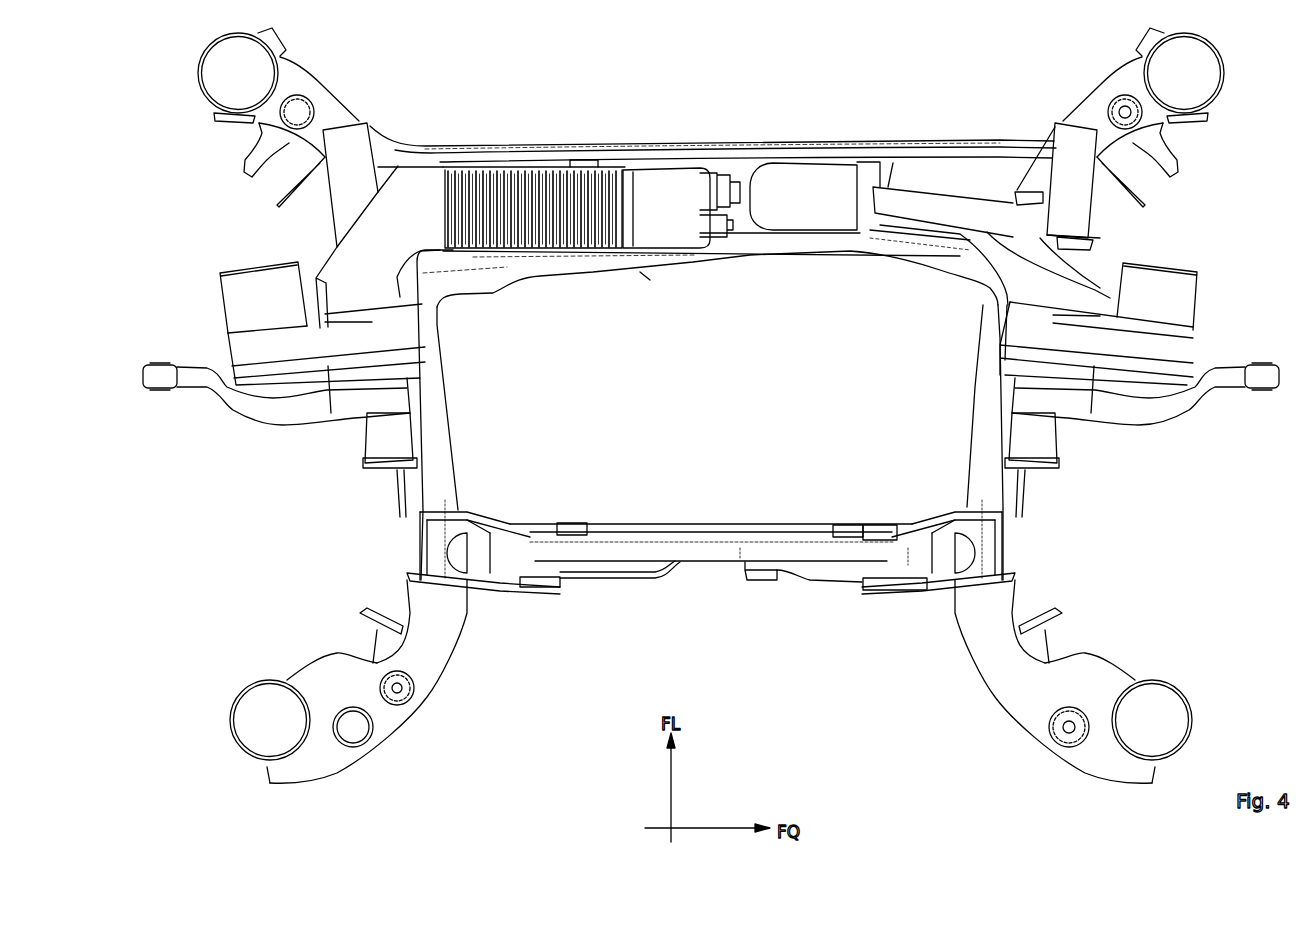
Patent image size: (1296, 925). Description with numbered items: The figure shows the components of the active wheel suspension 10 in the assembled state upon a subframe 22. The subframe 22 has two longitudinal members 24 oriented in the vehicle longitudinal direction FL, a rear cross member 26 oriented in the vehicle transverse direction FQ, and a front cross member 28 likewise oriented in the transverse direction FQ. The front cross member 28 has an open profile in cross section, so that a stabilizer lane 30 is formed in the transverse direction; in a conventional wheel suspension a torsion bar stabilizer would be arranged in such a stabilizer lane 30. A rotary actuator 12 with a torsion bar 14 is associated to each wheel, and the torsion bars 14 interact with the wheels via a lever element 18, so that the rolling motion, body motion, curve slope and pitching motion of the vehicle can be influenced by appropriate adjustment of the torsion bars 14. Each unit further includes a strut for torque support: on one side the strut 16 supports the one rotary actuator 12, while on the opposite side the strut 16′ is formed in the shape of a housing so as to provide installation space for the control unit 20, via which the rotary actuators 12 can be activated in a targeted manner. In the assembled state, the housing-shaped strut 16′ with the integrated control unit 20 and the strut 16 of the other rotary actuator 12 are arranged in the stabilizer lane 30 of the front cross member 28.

The front axle 10 is at (142, 69).
The rotary actuator 12 is at (247, 303).
The torsion bar 14 is at (375, 440).
The strut 16 is at (1010, 227).
The strut 16′ is at (397, 224).
The lever element 18 is at (223, 397).
The control unit 20 is at (668, 190).
The subframe 22 is at (439, 764).
The longitudinal member 24 is at (450, 630).
The rear cross member 26 is at (832, 547).
The front cross member 28 is at (800, 245).
The stabilizer lane 30 is at (945, 168).